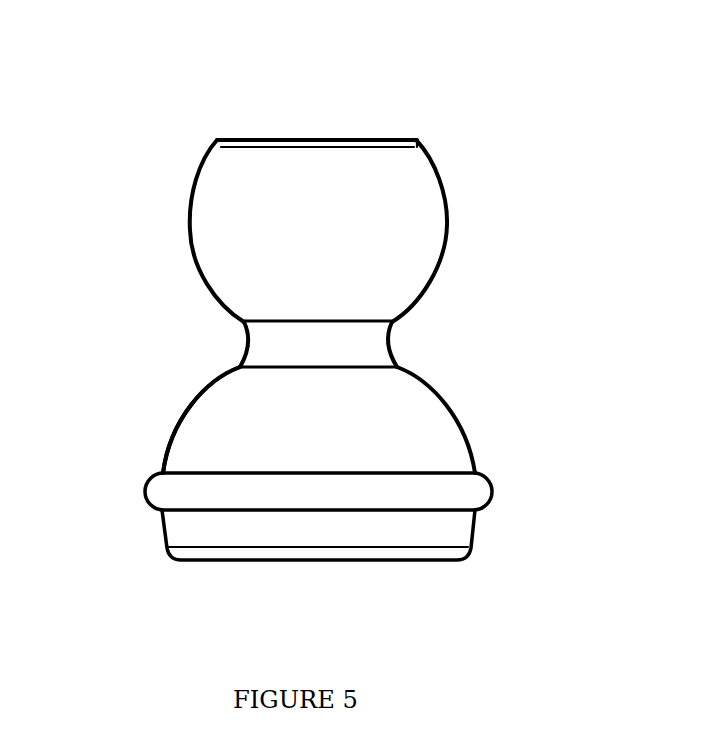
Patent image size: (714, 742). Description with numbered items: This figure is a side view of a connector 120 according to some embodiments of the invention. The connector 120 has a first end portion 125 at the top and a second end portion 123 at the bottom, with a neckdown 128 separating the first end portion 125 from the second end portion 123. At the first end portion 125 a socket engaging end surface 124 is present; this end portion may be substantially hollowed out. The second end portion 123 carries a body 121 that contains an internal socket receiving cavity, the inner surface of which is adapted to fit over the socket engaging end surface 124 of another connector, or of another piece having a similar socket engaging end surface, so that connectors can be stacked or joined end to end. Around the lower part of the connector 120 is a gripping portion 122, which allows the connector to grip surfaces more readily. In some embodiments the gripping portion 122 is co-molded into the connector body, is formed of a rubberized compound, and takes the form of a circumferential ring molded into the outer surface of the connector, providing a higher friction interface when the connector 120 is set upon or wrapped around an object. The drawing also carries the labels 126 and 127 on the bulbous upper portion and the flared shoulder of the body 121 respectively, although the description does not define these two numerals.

The connector 120 is at (533, 170).
The body 121 is at (435, 397).
The gripping portion 122 is at (490, 478).
The second end portion 123 is at (458, 562).
The socket engaging end surface 124 is at (197, 185).
The first end portion 125 is at (417, 140).
The bowl portion 126 is at (188, 242).
The shoulder surface 127 is at (177, 428).
The neckdown 128 is at (385, 343).